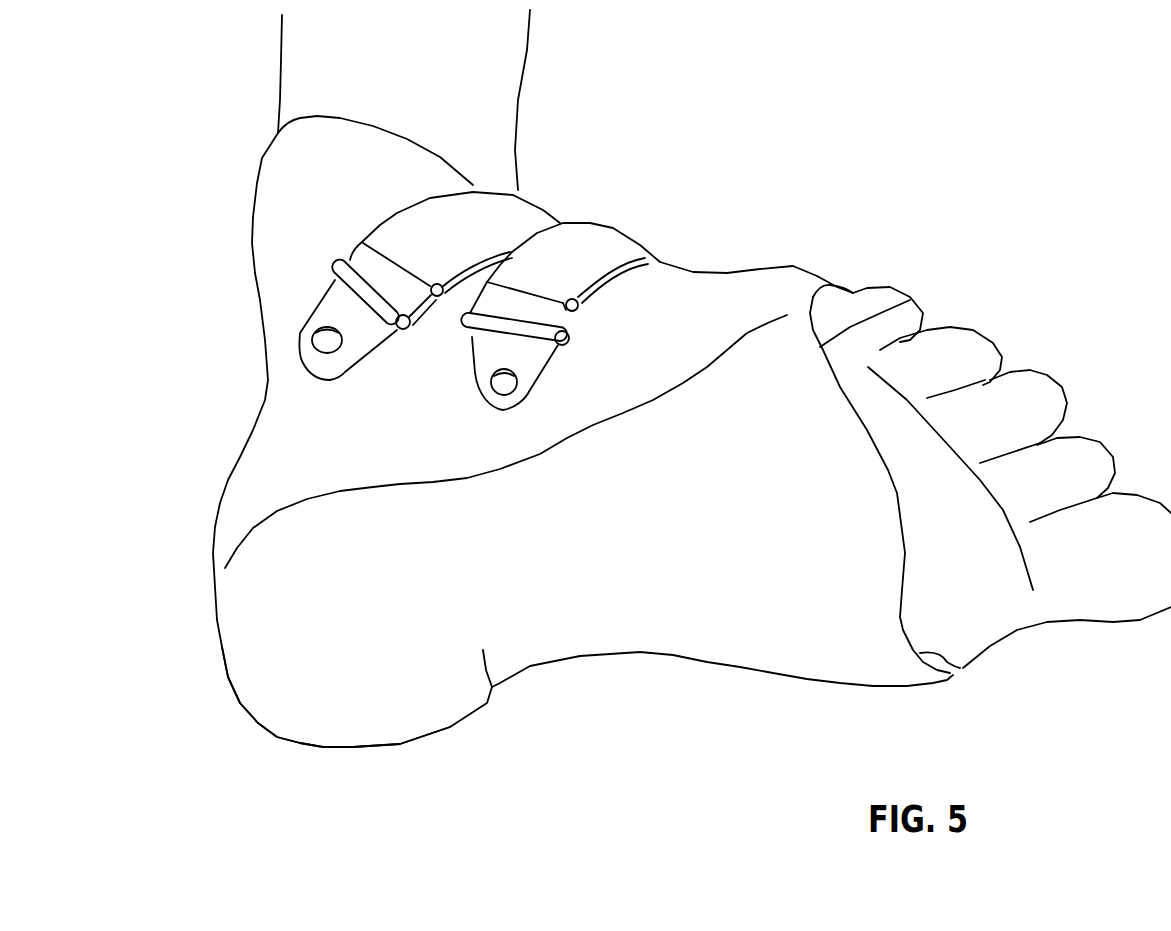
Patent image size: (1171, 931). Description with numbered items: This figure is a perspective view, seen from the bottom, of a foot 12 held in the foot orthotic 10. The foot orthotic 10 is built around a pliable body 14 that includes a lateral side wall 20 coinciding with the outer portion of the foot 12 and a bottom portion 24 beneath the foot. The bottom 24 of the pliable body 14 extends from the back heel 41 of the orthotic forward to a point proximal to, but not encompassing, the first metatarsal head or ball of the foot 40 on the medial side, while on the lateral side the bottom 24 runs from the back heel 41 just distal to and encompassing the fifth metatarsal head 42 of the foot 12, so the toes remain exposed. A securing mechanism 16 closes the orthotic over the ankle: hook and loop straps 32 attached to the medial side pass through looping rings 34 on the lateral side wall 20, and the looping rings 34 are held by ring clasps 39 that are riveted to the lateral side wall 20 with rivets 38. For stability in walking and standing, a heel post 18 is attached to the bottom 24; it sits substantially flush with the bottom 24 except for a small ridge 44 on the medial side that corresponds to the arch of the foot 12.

The foot orthotic 10 is at (797, 116).
The foot 12 is at (1017, 618).
The pliable body 14 is at (598, 705).
The securing mechanism 16 is at (656, 126).
The heel post 18 is at (392, 708).
The lateral side wall 20 is at (393, 390).
The bottom portion 24 is at (675, 492).
The hook and loop straps 32 is at (460, 222).
The looping rings 34 is at (355, 252).
The rivets 38 is at (327, 343).
The ring clasps 39 is at (330, 322).
The first metatarsal head 40 is at (953, 665).
The back heel 41 is at (277, 738).
The fifth metatarsal head 42 is at (920, 297).
The small ridge 44 is at (493, 685).